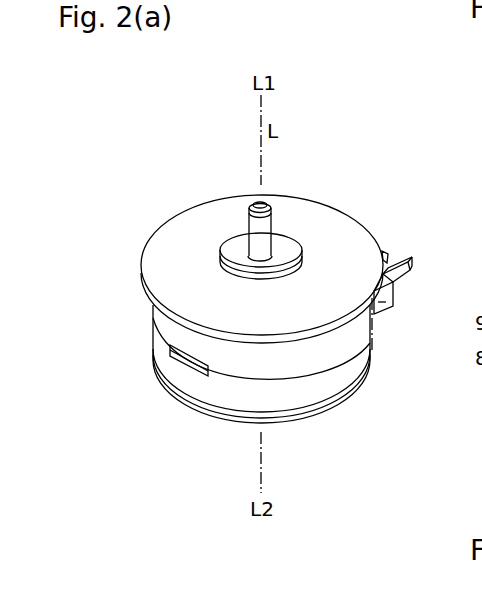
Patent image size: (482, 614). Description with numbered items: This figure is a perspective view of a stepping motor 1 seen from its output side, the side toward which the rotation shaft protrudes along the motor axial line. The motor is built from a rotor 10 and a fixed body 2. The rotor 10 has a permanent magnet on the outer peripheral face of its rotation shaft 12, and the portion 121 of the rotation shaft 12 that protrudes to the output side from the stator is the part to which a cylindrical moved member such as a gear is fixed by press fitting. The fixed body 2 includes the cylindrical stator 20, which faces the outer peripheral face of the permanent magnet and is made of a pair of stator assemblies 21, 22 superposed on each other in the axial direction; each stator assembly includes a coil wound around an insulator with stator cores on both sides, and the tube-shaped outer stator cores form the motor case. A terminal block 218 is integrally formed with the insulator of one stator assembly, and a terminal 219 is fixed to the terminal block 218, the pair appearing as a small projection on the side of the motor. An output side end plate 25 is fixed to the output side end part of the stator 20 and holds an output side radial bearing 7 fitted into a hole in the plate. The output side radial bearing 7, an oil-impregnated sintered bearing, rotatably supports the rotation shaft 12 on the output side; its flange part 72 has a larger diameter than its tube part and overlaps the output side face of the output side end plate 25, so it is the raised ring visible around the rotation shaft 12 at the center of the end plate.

The stepping motor 1 is at (328, 128).
The fixed body 2 is at (81, 218).
The output side radial bearing 7 is at (222, 250).
The output side end plate 25 is at (168, 263).
The stator 20 is at (113, 307).
The stator assembly 21 is at (141, 305).
The stator assembly 22 is at (141, 335).
The portion of the rotation shaft 121 is at (250, 226).
The rotation shaft 12 is at (263, 197).
The rotor 10 is at (263, 197).
The flange part 72 is at (289, 249).
The terminal block 218 is at (392, 302).
The terminal 219 is at (410, 276).